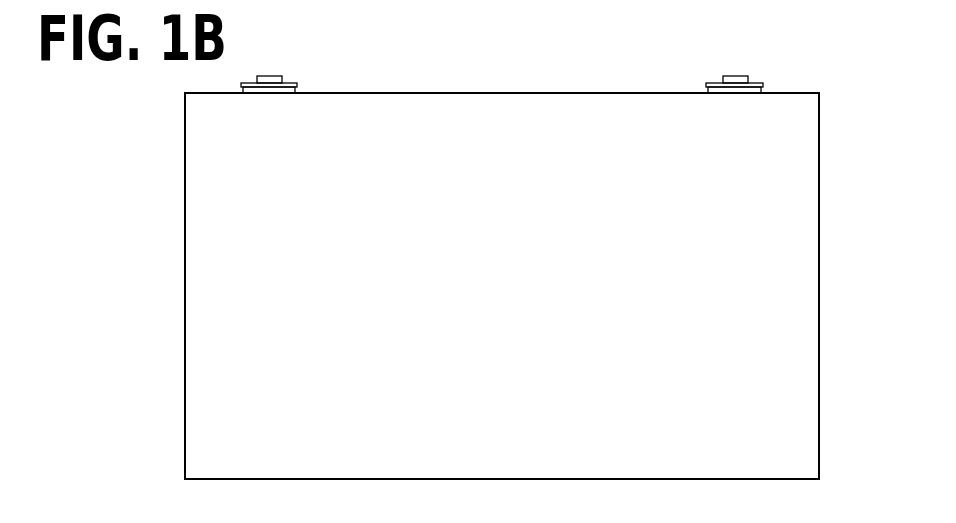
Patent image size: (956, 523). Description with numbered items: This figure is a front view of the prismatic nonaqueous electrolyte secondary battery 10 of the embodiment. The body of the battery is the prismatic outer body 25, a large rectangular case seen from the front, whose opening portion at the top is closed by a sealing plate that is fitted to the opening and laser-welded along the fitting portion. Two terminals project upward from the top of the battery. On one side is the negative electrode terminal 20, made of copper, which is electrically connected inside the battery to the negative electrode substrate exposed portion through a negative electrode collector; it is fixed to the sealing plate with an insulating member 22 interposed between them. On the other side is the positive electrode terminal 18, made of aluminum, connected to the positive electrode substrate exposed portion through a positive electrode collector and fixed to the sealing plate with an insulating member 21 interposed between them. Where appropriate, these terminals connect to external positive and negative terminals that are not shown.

The prismatic nonaqueous electrolyte secondary battery 10 is at (147, 98).
The prismatic outer body 25 is at (235, 245).
The negative electrode terminal 20 is at (260, 76).
The insulating member 22 is at (288, 85).
The positive electrode terminal 18 is at (730, 80).
The insulating member 21 is at (752, 87).